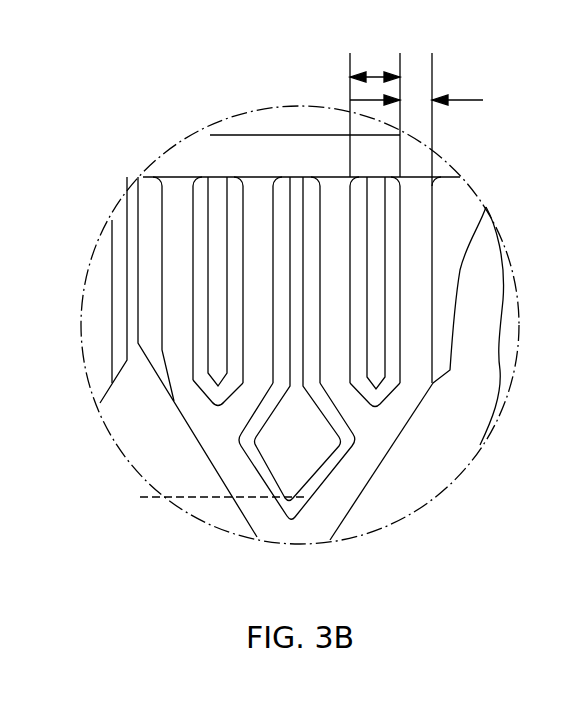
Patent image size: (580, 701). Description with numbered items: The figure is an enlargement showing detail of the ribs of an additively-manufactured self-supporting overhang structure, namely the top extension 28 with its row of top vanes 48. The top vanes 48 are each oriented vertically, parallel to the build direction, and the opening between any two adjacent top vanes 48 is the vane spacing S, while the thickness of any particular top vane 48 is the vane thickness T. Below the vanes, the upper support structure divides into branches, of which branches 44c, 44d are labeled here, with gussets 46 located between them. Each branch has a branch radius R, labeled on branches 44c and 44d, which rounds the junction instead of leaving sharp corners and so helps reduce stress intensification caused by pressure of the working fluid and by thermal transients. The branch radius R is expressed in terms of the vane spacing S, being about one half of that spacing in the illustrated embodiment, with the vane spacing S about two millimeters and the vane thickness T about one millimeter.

The top extension 28 is at (167, 157).
The top vanes 48 is at (262, 190).
The gussets 46 is at (358, 486).
The branch radius R is at (376, 397).
The branch 44c is at (356, 532).
The branch 44d is at (158, 424).
The vane spacing S is at (374, 76).
The vane thickness T is at (468, 100).